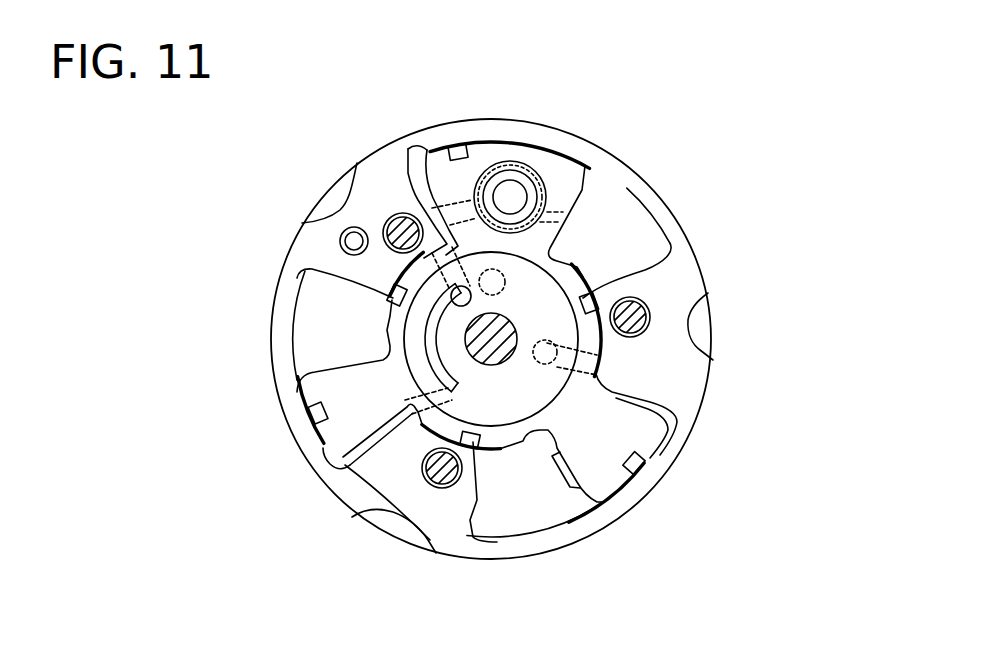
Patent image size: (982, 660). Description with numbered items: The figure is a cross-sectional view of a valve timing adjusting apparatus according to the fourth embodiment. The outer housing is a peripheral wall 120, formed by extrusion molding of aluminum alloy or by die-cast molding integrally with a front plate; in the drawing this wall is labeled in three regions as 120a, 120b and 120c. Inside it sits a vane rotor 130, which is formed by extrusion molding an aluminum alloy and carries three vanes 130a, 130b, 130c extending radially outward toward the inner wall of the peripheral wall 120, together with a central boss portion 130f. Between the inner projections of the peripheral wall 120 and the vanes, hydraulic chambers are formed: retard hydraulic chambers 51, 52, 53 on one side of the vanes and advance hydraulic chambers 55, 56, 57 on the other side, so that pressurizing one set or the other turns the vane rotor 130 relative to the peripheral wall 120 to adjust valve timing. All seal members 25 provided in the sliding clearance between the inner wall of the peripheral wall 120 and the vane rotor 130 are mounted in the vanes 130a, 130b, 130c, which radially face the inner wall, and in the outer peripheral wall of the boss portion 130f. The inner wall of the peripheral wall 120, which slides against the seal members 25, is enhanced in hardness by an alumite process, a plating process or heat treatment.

The seal member 25 is at (458, 146).
The retard hydraulic chamber 51 is at (617, 210).
The retard hydraulic chamber 52 is at (545, 505).
The retard hydraulic chamber 53 is at (297, 344).
The advance hydraulic chamber 55 is at (413, 168).
The advance hydraulic chamber 56 is at (678, 418).
The advance hydraulic chamber 57 is at (345, 466).
The peripheral wall 120 is at (620, 190).
The ring segment 120a is at (636, 362).
The ring segment 120b is at (481, 500).
The ring segment 120c is at (367, 273).
The vane rotor 130 is at (577, 266).
The vane 130a is at (556, 160).
The vane 130b is at (607, 483).
The vane 130c is at (330, 422).
The boss portion 130f is at (598, 203).